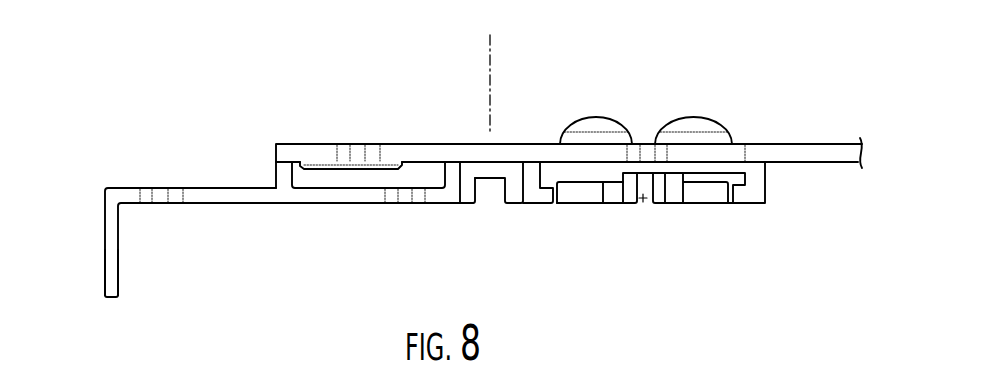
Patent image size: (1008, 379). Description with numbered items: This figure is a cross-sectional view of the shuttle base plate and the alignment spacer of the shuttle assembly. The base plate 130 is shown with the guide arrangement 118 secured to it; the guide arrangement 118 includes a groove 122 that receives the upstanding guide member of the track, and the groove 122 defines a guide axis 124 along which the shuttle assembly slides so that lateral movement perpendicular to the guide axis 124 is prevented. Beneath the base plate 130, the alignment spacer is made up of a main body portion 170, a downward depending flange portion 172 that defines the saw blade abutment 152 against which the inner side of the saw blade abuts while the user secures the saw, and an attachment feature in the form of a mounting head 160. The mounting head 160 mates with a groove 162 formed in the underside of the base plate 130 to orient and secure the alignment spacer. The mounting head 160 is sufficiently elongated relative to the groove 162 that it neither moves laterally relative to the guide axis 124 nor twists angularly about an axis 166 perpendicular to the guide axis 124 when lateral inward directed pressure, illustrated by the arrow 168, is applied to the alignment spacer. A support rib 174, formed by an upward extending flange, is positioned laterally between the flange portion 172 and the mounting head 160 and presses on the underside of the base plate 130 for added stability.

The guide arrangement 118 is at (583, 203).
The groove 122 is at (661, 170).
The guide axis 124 is at (647, 205).
The base plate 130 is at (570, 152).
The saw blade abutment 152 is at (102, 233).
The mounting head 160 is at (498, 170).
The groove 162 is at (472, 172).
The axis 166 is at (490, 72).
The arrow 168 is at (100, 258).
The main body portion 170 is at (230, 200).
The flange portion 172 is at (112, 263).
The support rib 174 is at (288, 180).